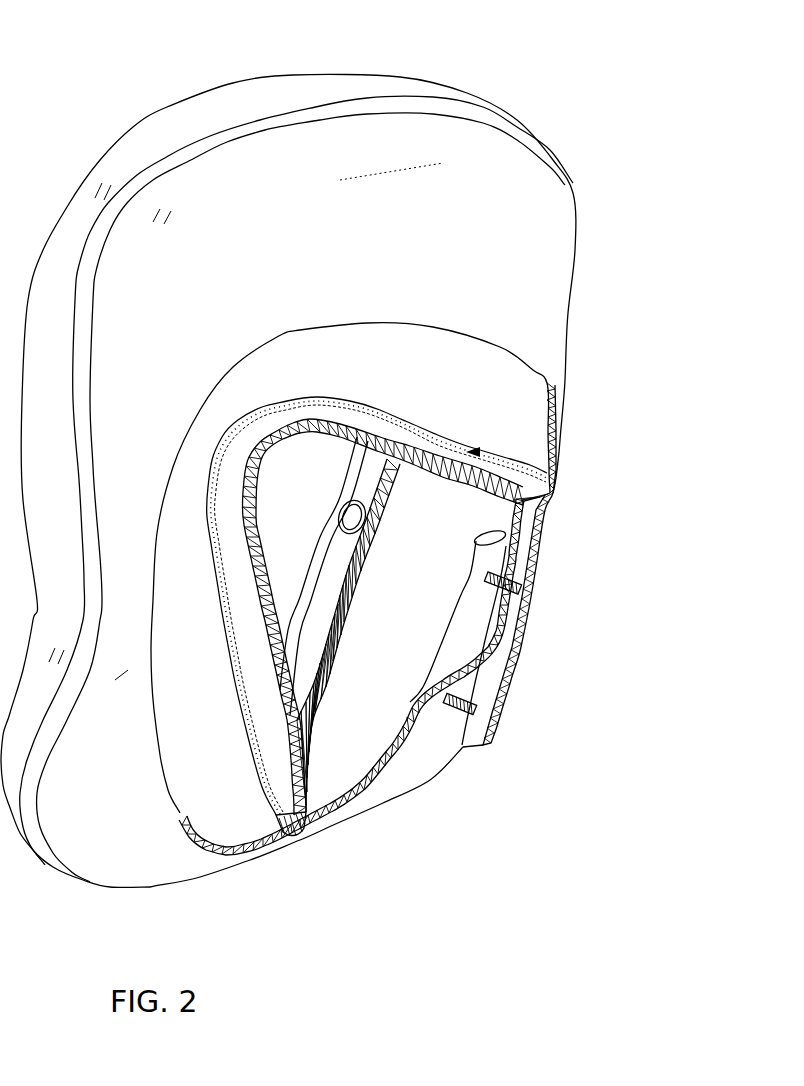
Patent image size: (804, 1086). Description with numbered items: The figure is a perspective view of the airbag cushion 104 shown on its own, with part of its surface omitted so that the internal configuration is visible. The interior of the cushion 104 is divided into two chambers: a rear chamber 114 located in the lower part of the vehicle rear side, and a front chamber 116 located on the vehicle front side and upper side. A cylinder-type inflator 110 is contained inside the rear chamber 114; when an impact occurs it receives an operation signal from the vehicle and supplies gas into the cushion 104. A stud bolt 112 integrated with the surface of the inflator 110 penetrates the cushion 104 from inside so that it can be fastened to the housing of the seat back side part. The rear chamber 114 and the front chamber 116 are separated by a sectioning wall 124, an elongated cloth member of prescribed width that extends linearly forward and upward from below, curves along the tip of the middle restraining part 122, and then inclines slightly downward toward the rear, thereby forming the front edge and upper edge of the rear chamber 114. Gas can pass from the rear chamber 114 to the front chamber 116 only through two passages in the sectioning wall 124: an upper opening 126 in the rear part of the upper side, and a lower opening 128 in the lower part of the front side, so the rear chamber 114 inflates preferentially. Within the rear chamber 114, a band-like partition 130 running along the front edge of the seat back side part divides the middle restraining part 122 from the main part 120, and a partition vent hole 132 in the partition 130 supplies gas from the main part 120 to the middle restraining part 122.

The cushion 104 is at (76, 83).
The front chamber 116 is at (393, 265).
The rear chamber 114 is at (407, 773).
The main part 120 is at (518, 520).
The inflator 110 is at (495, 558).
The stud bolt 112 is at (533, 590).
The upper opening 126 is at (497, 452).
The sectioning wall 124 is at (413, 437).
The middle restraining part 122 is at (300, 460).
The lower opening 128 is at (291, 836).
The partition 130 is at (367, 470).
The partition vent hole 132 is at (370, 542).